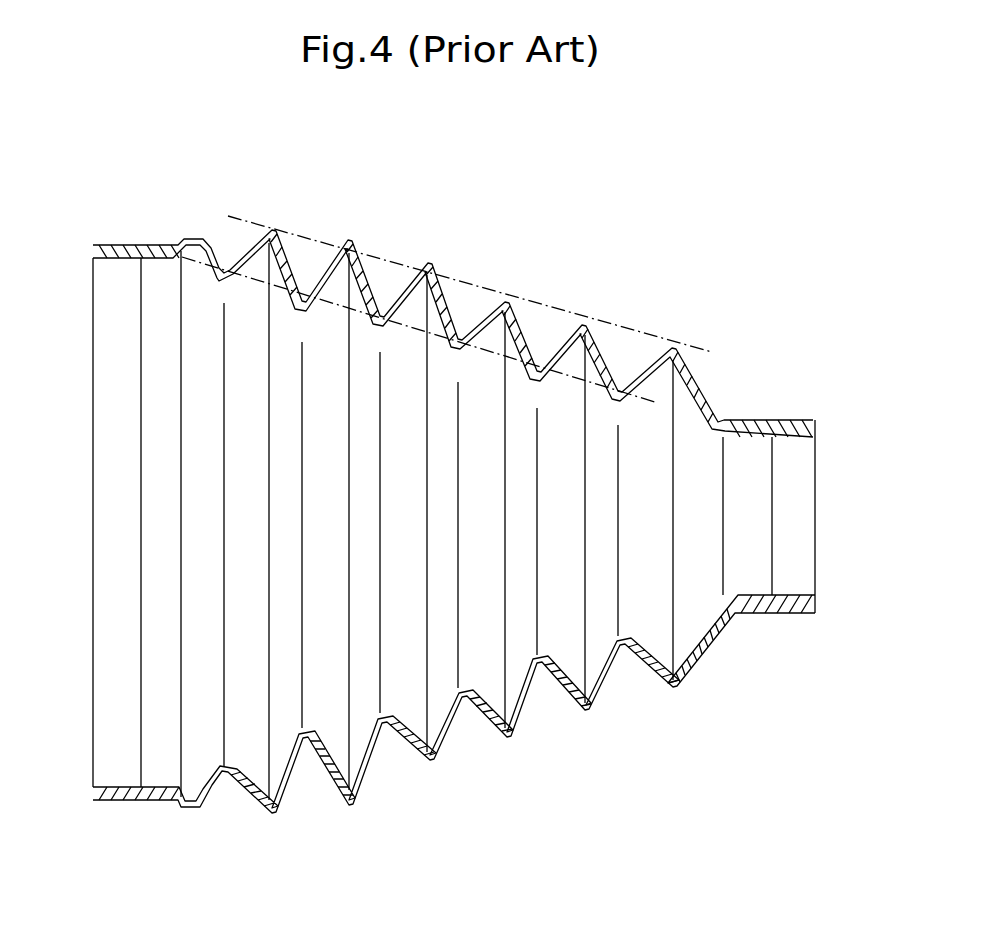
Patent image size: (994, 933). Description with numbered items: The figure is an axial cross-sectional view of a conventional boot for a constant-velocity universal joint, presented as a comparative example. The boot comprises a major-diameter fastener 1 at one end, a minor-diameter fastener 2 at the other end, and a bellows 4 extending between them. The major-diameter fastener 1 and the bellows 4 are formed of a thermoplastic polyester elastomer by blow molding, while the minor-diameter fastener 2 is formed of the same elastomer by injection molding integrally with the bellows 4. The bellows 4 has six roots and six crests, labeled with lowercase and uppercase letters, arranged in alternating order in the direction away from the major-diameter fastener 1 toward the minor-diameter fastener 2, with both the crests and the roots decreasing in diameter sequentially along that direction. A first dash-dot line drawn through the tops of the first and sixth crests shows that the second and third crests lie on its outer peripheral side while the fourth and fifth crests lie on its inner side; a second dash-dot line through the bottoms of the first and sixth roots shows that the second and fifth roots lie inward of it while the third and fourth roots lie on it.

The major-diameter fastener 1 is at (117, 246).
The minor-diameter fastener 2 is at (778, 420).
The bellows 4 is at (515, 247).